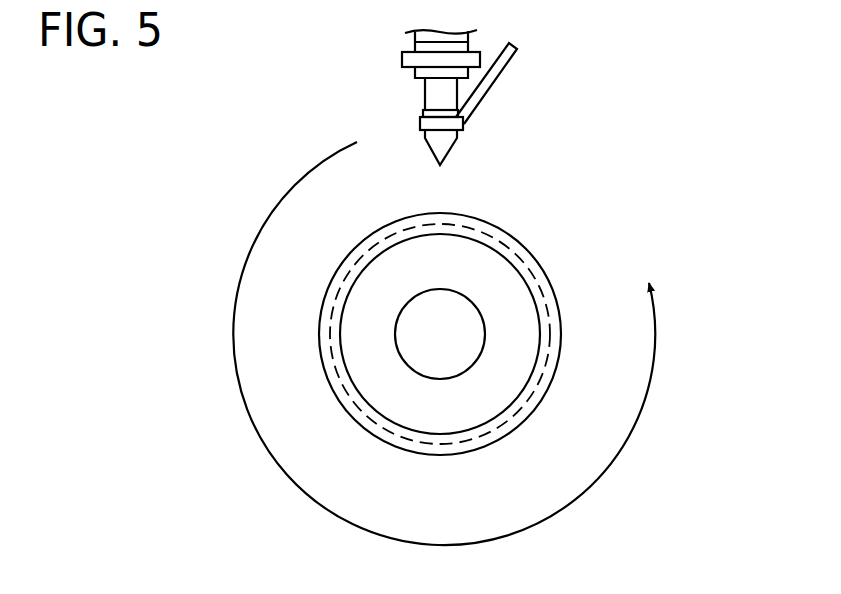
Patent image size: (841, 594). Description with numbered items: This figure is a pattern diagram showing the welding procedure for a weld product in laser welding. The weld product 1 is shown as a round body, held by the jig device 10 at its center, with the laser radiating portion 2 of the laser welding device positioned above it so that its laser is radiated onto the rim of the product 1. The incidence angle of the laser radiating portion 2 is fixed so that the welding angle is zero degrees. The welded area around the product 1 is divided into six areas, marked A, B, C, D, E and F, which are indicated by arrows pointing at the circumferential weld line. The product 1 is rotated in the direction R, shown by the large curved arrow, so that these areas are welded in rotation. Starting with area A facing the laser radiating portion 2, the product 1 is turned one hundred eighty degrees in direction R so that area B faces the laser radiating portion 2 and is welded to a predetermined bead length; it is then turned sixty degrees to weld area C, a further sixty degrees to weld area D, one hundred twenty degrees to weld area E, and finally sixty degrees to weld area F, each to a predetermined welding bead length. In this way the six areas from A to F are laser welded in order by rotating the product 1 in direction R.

The weld product 1 is at (500, 235).
The laser radiating portion 2 is at (489, 88).
The jig device 10 is at (452, 348).
The rotation direction R is at (652, 362).
The welded area A is at (440, 222).
The welded area B is at (440, 444).
The welded area C is at (342, 387).
The welded area D is at (343, 277).
The welded area E is at (535, 278).
The welded area F is at (535, 390).